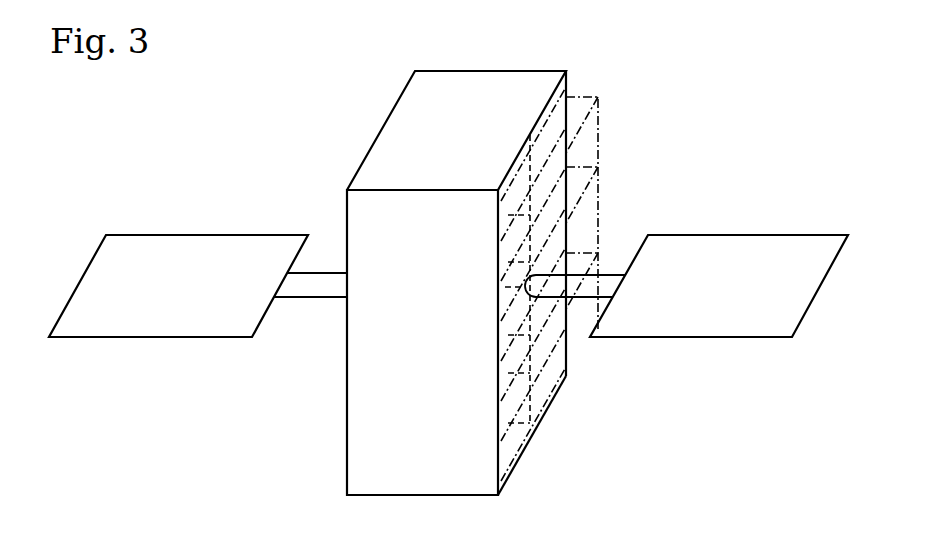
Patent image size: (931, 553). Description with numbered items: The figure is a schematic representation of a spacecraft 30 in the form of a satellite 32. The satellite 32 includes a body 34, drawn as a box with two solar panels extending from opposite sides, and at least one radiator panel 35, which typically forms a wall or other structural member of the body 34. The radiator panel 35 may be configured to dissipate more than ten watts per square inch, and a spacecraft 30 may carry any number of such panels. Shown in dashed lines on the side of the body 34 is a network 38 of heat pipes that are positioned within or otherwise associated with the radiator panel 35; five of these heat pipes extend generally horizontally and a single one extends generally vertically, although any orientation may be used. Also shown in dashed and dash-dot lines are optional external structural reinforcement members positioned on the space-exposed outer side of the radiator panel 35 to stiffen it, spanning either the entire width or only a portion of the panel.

The spacecraft 30 is at (714, 33).
The satellite 32 is at (632, 51).
The body 34 is at (502, 43).
The radiator panel 35 is at (612, 154).
The network of heat pipes 38 is at (516, 435).